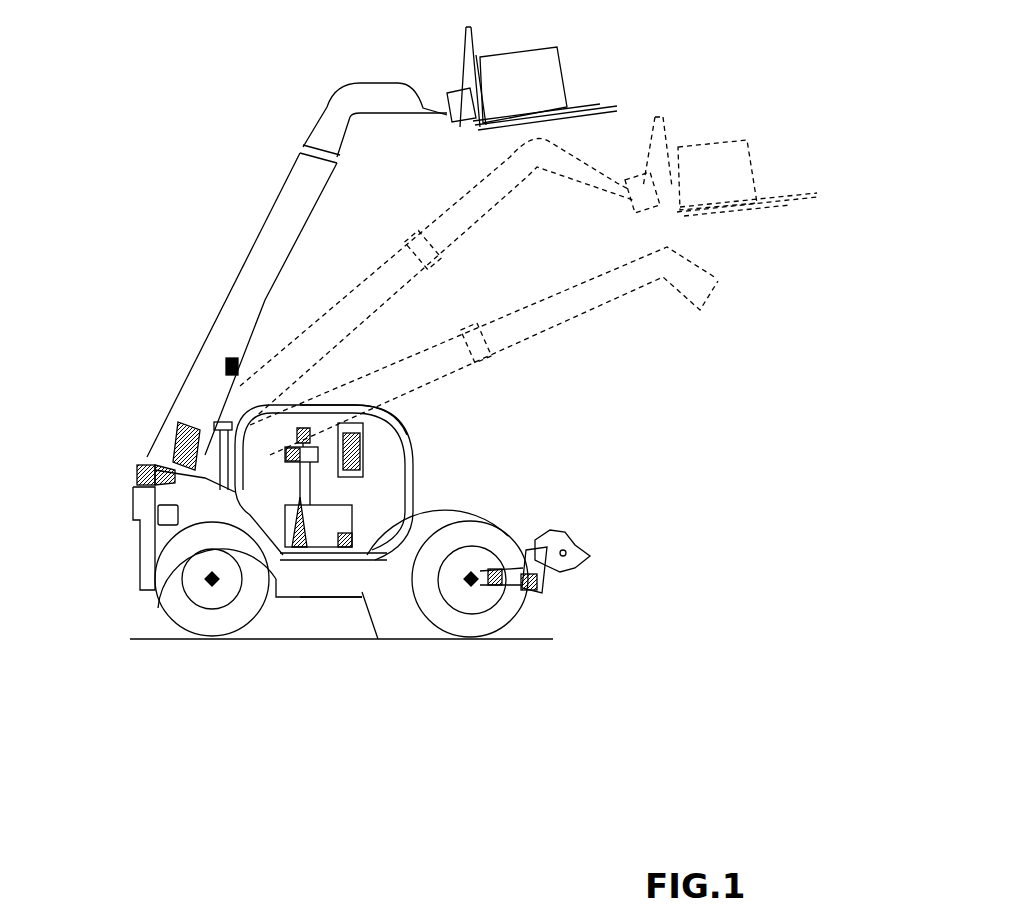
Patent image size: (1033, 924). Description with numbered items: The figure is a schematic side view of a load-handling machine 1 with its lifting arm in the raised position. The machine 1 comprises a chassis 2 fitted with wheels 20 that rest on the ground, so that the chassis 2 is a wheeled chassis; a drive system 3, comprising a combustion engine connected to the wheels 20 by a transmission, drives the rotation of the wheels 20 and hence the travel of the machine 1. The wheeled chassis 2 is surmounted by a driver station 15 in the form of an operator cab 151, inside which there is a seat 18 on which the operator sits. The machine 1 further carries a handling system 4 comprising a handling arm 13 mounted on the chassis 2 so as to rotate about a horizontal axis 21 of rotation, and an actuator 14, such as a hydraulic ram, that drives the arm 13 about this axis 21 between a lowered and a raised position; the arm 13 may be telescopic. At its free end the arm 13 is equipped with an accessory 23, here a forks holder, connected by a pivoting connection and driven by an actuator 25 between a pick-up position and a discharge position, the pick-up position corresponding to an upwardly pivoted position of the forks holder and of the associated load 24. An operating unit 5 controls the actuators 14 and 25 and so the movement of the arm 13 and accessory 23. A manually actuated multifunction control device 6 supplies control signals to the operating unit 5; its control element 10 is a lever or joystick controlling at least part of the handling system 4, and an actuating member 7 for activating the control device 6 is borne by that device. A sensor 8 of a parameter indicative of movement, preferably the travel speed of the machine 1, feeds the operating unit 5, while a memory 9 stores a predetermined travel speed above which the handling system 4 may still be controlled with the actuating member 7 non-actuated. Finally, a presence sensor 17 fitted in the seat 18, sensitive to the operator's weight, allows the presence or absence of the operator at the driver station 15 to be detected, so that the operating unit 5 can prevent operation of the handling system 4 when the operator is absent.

The load-handling machine 1 is at (130, 432).
The chassis 2 is at (332, 578).
The drive system 3 is at (158, 517).
The handling system 4 is at (248, 262).
The operating unit 5 is at (352, 512).
The control device 6 is at (363, 457).
The actuating member 7 is at (313, 465).
The sensor 8 is at (480, 563).
The memory 9 is at (358, 588).
The control element 10 is at (303, 443).
The handling arm 13 is at (267, 217).
The actuator 14 is at (215, 425).
The driver station 15 is at (413, 450).
The operator cab 151 is at (387, 416).
The presence sensor 17 is at (295, 507).
The seat 18 is at (297, 462).
The wheels 20 is at (180, 610).
The horizontal axis of rotation 21 is at (155, 463).
The accessory 23 is at (610, 107).
The load 24 is at (563, 72).
The actuator 25 is at (420, 107).